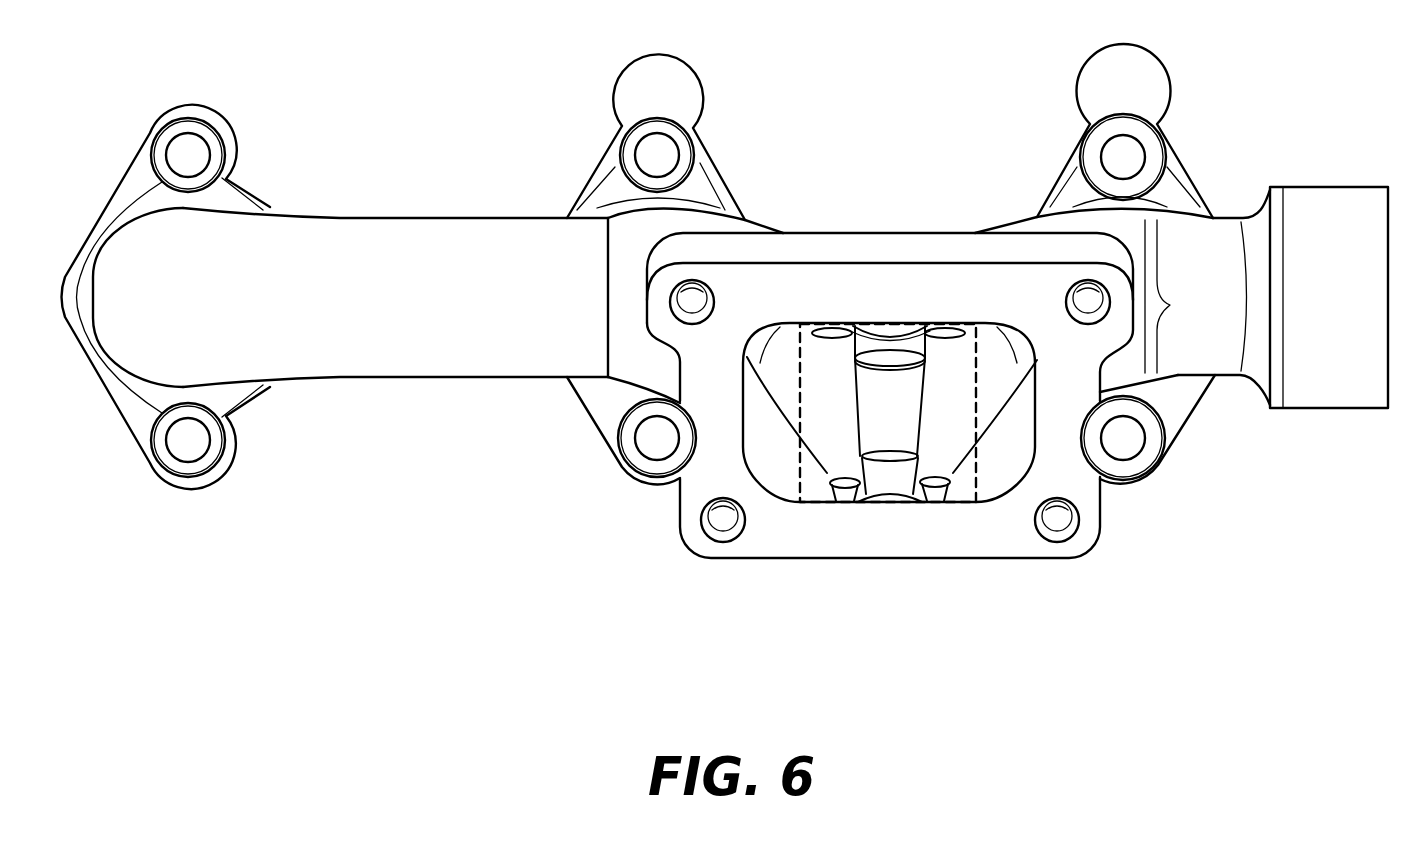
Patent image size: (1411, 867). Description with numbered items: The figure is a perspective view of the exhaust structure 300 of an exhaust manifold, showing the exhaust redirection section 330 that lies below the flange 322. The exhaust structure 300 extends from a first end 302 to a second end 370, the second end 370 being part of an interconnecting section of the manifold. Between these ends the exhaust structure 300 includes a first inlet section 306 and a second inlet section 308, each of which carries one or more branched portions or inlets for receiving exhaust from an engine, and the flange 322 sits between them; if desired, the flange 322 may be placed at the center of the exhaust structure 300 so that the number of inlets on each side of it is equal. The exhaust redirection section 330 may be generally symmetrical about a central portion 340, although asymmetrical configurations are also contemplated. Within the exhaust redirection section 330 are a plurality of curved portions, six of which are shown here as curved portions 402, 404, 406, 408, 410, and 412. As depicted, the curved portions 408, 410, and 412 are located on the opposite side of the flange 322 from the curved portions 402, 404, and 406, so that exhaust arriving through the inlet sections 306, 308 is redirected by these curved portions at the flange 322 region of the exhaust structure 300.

The exhaust structure 300 is at (382, 116).
The first end 302 is at (117, 278).
The first inlet section 306 is at (414, 422).
The second inlet section 308 is at (1214, 165).
The flange 322 is at (768, 537).
The exhaust redirection section 330 is at (797, 442).
The central portion 340 is at (912, 419).
The second end 370 is at (1322, 388).
The curved portion 402 is at (835, 326).
The curved portion 404 is at (948, 326).
The curved portion 406 is at (887, 355).
The curved portion 408 is at (892, 463).
The curved portion 410 is at (937, 490).
The curved portion 412 is at (850, 490).